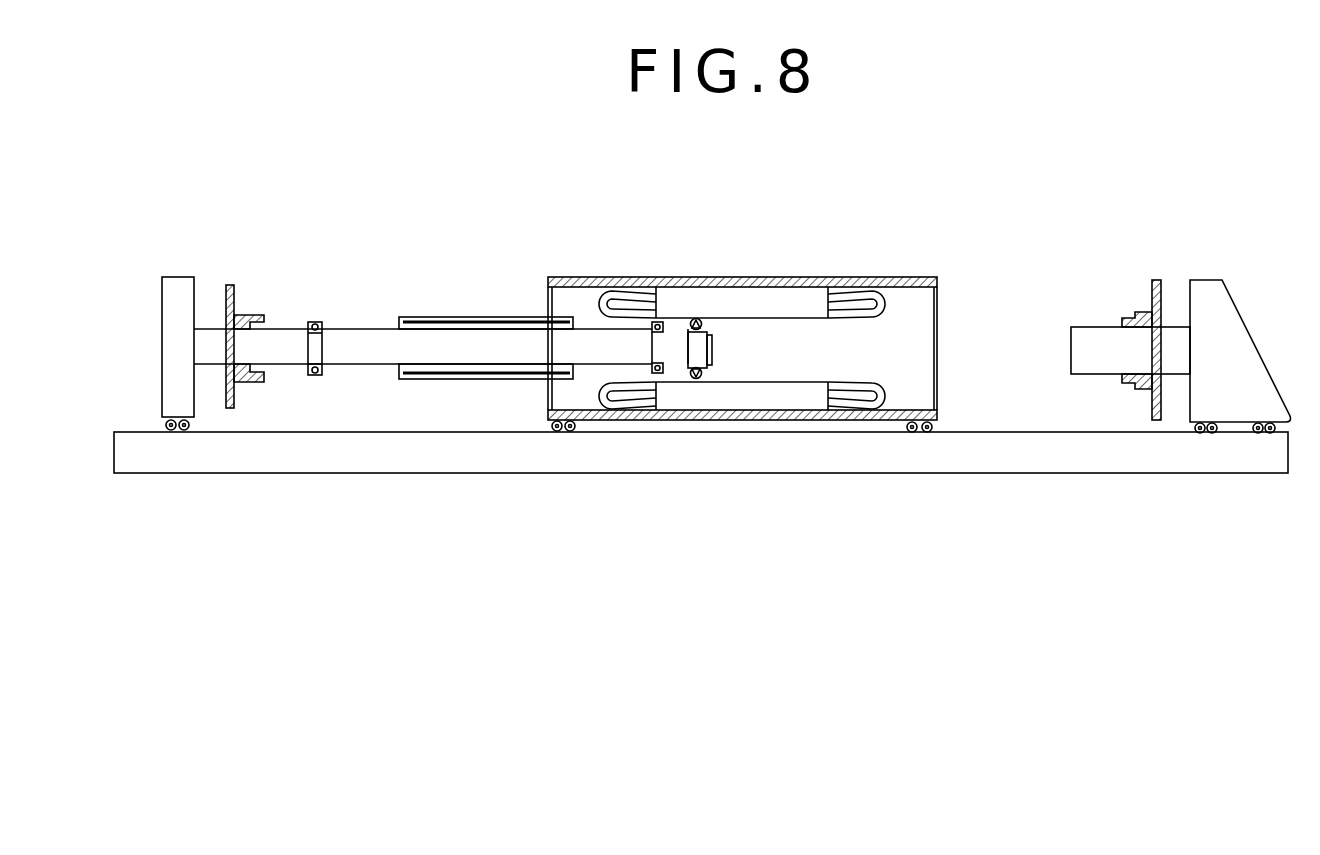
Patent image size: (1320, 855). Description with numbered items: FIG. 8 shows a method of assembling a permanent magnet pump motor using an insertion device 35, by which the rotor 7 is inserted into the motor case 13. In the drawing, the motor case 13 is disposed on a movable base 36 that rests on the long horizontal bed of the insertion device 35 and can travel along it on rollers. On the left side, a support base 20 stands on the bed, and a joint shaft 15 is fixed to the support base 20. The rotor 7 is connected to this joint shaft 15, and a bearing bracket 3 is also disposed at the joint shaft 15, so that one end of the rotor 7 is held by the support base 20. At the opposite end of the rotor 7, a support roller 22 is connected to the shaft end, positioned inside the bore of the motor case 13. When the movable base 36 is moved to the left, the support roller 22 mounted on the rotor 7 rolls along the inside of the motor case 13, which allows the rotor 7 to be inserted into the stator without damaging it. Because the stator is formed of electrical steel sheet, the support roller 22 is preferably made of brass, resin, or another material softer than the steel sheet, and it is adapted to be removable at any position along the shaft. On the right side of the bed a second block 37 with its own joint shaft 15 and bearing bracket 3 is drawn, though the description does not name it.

The bearing bracket 3 is at (236, 290).
The rotor 7 is at (443, 312).
The motor case 13 is at (868, 277).
The joint shaft 15 is at (288, 352).
The support base 20 is at (178, 284).
The support roller 22 is at (700, 336).
The insertion device 35 is at (792, 496).
The movable base 36 is at (549, 430).
The tail block 37 is at (1208, 284).